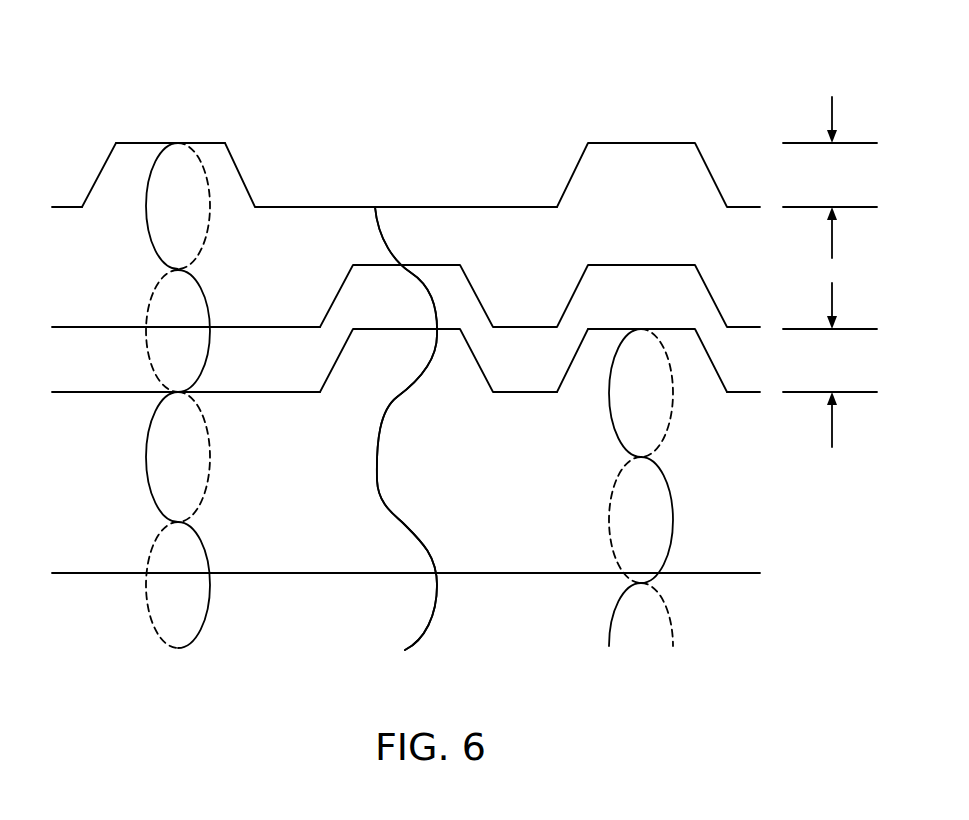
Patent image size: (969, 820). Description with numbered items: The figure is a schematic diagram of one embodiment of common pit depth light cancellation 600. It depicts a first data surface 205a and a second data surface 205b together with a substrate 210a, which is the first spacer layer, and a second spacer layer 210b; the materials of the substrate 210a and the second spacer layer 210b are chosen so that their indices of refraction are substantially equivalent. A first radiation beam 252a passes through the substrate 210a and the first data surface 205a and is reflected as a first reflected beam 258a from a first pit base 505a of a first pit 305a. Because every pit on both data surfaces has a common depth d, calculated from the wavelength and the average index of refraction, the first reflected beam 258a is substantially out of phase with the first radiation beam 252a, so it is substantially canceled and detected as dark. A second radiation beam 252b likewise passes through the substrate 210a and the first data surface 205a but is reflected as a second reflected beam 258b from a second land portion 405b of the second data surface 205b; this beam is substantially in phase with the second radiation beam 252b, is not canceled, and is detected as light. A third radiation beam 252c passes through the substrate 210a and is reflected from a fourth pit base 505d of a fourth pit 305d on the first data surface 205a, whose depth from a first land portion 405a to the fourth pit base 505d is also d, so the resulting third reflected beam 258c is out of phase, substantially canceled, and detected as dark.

The common pit depth light cancellation 600 is at (161, 62).
The first pit base 505a is at (160, 143).
The first pit 305a is at (100, 172).
The second land portion 405b is at (80, 207).
The second data surface 205b is at (292, 207).
The first reflected beam 258a is at (147, 322).
The second spacer layer 210b is at (100, 327).
The first data surface 205a is at (95, 392).
The first radiation beam 252a is at (147, 457).
The second radiation beam 252b is at (377, 452).
The second reflected beam 258b is at (382, 428).
The fourth pit 305d is at (566, 375).
The fourth pit base 505d is at (665, 329).
The first land portion 405a is at (753, 392).
The third reflected beam 258c is at (610, 500).
The third radiation beam 252c is at (611, 642).
The substrate 210a is at (123, 573).